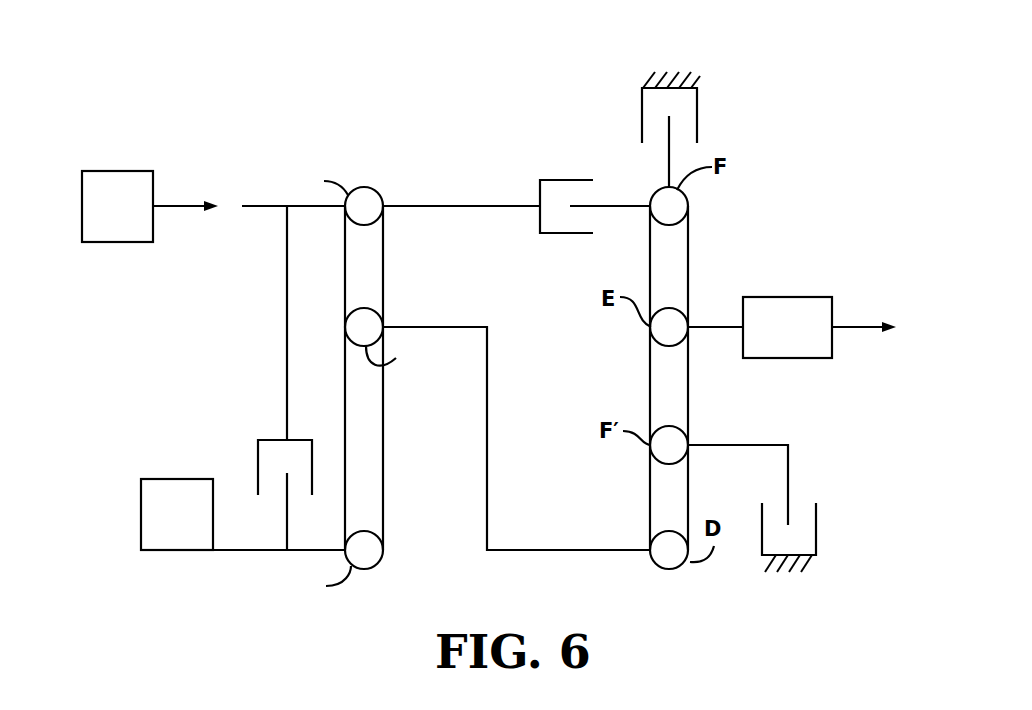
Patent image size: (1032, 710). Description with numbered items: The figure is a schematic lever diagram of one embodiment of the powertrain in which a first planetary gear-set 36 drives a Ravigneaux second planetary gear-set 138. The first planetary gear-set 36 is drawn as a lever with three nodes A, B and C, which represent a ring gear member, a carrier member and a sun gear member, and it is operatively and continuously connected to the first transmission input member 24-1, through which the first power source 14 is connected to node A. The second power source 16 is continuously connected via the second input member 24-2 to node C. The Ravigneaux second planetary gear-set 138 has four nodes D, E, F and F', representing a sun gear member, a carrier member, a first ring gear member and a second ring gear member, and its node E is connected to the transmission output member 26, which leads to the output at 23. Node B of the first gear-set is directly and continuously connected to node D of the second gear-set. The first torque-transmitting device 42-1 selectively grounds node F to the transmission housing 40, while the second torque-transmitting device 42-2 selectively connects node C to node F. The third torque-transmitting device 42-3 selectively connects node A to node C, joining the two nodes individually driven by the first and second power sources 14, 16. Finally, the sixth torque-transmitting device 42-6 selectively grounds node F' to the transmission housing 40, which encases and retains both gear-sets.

The first power source 14 is at (141, 513).
The second power source 16 is at (82, 206).
The output station 23 is at (832, 356).
The first transmission input member 24-1 is at (240, 551).
The second input member 24-2 is at (265, 205).
The transmission output member 26 is at (706, 327).
The first planetary gear-set 36 is at (410, 528).
The transmission housing 40 is at (691, 78).
The first torque-transmitting device 42-1 is at (697, 115).
The second torque-transmitting device 42-2 is at (576, 180).
The third torque-transmitting device 42-3 is at (258, 470).
The sixth torque-transmitting device 42-6 is at (816, 553).
The Ravigneaux second planetary gear-set 138 is at (793, 238).